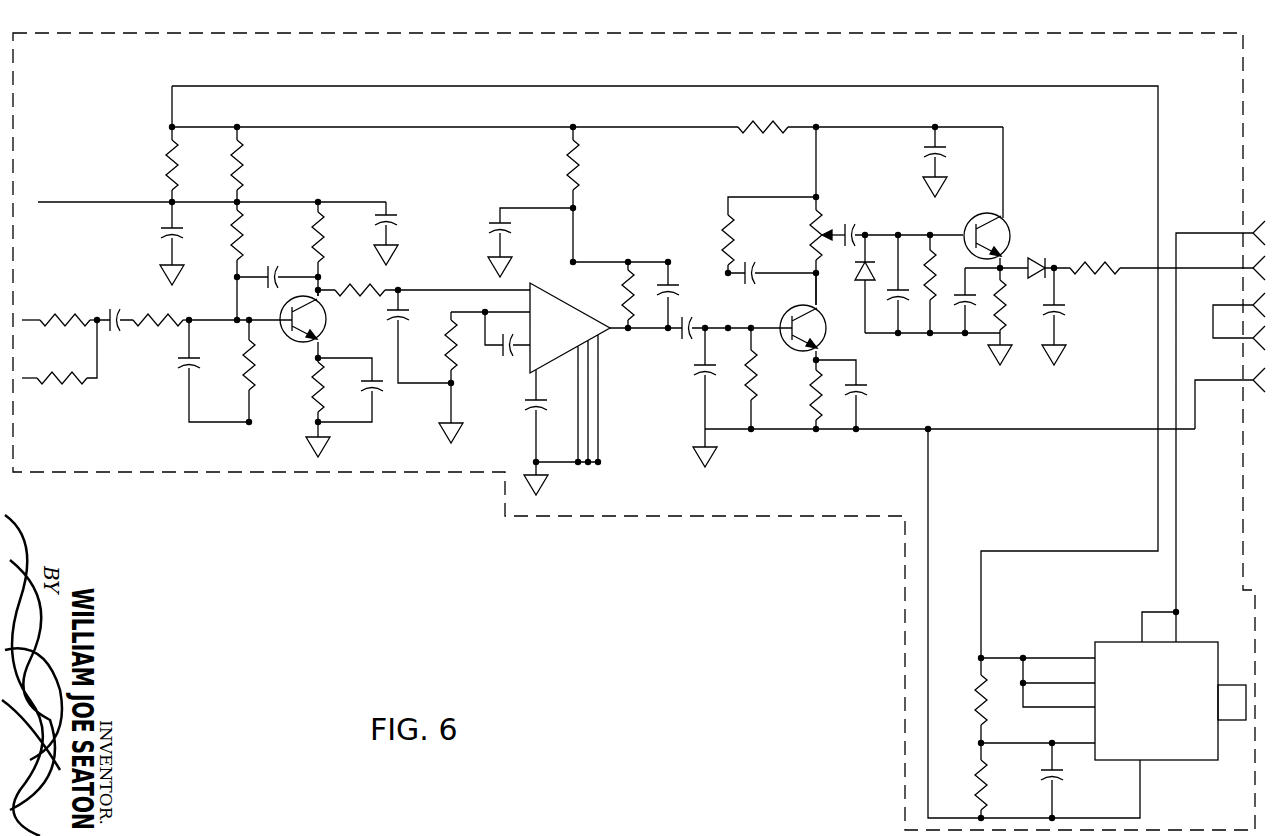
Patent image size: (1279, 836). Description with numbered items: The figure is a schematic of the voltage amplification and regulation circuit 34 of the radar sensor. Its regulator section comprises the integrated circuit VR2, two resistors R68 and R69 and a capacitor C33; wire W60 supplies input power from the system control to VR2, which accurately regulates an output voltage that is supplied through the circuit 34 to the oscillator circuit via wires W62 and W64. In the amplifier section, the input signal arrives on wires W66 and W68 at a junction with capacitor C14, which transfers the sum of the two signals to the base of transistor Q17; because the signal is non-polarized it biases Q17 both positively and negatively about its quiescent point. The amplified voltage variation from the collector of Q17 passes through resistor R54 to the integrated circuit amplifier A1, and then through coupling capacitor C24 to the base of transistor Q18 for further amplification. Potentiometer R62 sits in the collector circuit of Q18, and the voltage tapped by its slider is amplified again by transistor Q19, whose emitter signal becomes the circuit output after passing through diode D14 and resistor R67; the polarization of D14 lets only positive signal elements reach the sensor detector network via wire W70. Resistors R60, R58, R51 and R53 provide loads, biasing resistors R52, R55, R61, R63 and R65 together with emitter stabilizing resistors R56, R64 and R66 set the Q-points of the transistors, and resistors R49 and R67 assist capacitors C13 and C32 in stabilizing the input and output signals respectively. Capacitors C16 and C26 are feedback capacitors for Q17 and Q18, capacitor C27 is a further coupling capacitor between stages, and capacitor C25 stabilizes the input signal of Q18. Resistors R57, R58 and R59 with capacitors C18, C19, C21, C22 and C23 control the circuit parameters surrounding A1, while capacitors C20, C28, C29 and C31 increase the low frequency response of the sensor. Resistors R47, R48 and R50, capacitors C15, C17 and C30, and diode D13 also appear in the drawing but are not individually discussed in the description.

The voltage amplification and regulation circuit 34 is at (892, 648).
The wire W62 is at (640, 90).
The wire W64 is at (114, 210).
The wire W66 is at (30, 318).
The wire W68 is at (30, 384).
The wire W70 is at (1200, 252).
The wire W60 is at (1180, 500).
The resistor R47 is at (70, 384).
The resistor R48 is at (62, 326).
The resistor R49 is at (148, 312).
The resistor R50 is at (180, 178).
The load resistor R51 is at (245, 150).
The biasing resistor R52 is at (232, 244).
The load resistor R53 is at (314, 238).
The resistor R54 is at (350, 284).
The biasing resistor R55 is at (246, 366).
The emitter stabilizing resistor R56 is at (312, 404).
The resistor R57 is at (454, 350).
The load resistor R58 is at (564, 182).
The resistor R59 is at (618, 304).
The load resistor R60 is at (762, 134).
The biasing resistor R61 is at (722, 238).
The potentiometer R62 is at (808, 242).
The biasing resistor R63 is at (760, 364).
The emitter stabilizing resistor R64 is at (808, 398).
The biasing resistor R65 is at (926, 252).
The emitter stabilizing resistor R66 is at (1006, 310).
The resistor R67 is at (1106, 276).
The resistor R68 is at (972, 692).
The resistor R69 is at (972, 786).
The capacitor C13 is at (182, 364).
The capacitor C14 is at (112, 316).
The capacitor C15 is at (165, 236).
The feedback capacitor C16 is at (268, 272).
The capacitor C17 is at (398, 228).
The capacitor C18 is at (492, 232).
The capacitor C19 is at (396, 340).
The capacitor C20 is at (380, 396).
The capacitor C21 is at (498, 358).
The capacitor C22 is at (528, 416).
The capacitor C23 is at (680, 292).
The coupling capacitor C24 is at (676, 342).
The stabilizing capacitor C25 is at (694, 374).
The feedback capacitor C26 is at (770, 262).
The coupling capacitor C27 is at (842, 224).
The capacitor C28 is at (894, 312).
The capacitor C29 is at (868, 396).
The capacitor C30 is at (924, 156).
The capacitor C31 is at (960, 318).
The capacitor C32 is at (1064, 316).
The capacitor C33 is at (1064, 778).
The transistor Q17 is at (290, 344).
The transistor Q18 is at (778, 314).
The transistor Q19 is at (978, 214).
The diode D13 is at (856, 280).
The diode D14 is at (1034, 262).
The integrated circuit amplifier A1 is at (570, 374).
The integrated circuit voltage regulator VR2 is at (1170, 686).